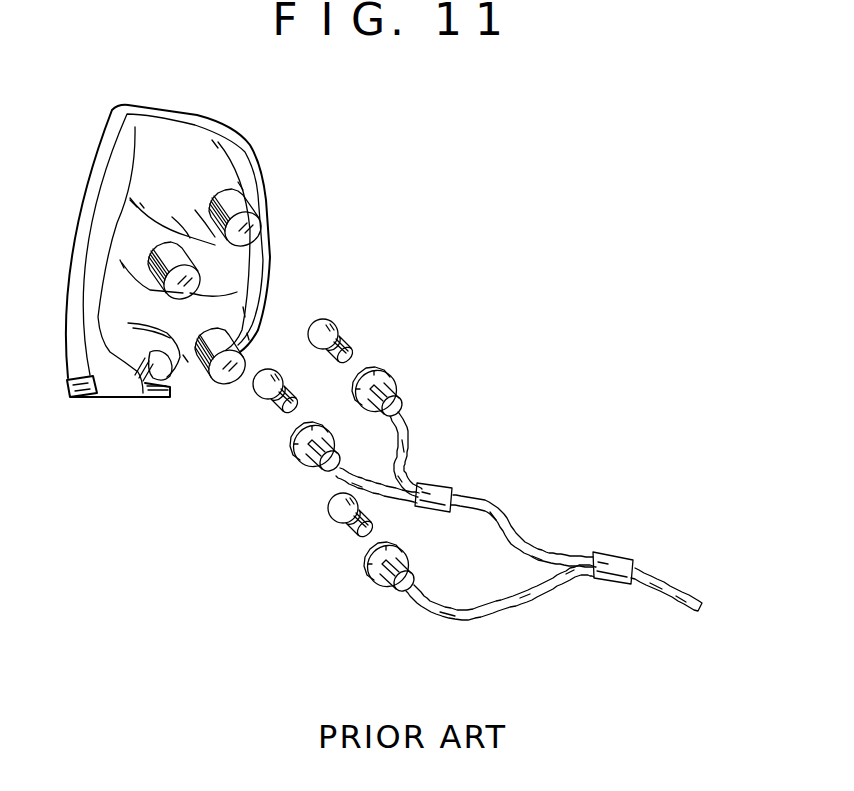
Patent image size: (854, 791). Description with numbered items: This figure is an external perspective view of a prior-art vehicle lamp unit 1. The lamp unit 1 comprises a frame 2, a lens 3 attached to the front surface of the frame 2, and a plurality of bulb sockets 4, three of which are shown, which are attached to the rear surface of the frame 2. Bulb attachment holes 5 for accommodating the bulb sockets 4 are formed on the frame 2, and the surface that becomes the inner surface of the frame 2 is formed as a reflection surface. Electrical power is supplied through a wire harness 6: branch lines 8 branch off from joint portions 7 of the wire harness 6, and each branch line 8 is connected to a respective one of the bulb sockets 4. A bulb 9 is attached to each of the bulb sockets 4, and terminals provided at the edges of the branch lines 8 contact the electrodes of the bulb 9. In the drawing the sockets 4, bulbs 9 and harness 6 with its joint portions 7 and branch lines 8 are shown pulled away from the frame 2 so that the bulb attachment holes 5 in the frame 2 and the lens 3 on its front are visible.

The vehicle lamp unit 1 is at (428, 215).
The frame 2 is at (262, 178).
The lens 3 is at (212, 123).
The bulb sockets 4 is at (387, 372).
The bulb attachment holes 5 is at (240, 367).
The wire harness 6 is at (653, 580).
The joint portions 7 is at (440, 497).
The branch lines 8 is at (412, 428).
The bulb 9 is at (340, 322).